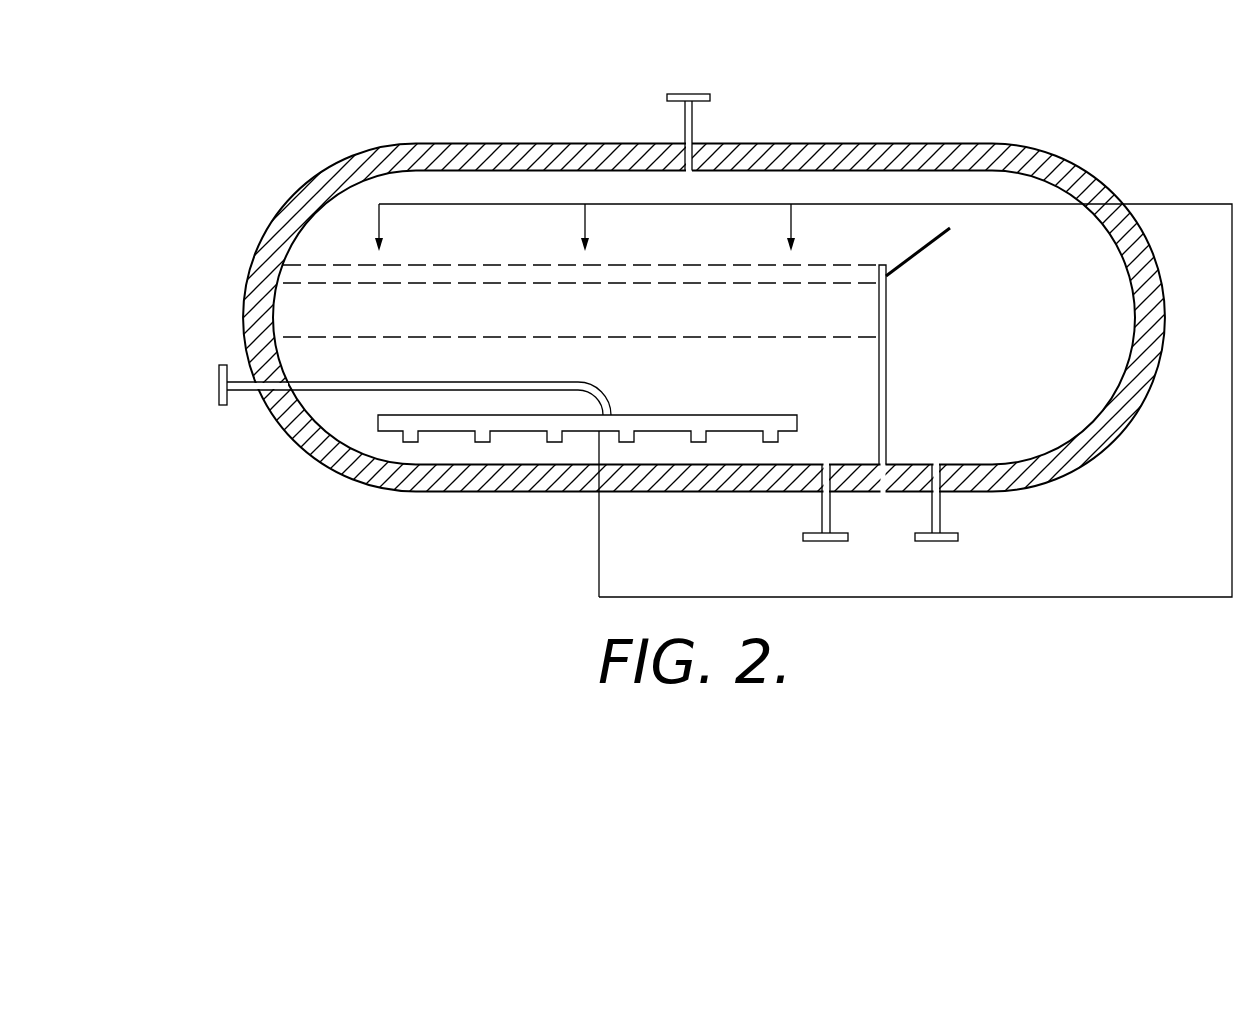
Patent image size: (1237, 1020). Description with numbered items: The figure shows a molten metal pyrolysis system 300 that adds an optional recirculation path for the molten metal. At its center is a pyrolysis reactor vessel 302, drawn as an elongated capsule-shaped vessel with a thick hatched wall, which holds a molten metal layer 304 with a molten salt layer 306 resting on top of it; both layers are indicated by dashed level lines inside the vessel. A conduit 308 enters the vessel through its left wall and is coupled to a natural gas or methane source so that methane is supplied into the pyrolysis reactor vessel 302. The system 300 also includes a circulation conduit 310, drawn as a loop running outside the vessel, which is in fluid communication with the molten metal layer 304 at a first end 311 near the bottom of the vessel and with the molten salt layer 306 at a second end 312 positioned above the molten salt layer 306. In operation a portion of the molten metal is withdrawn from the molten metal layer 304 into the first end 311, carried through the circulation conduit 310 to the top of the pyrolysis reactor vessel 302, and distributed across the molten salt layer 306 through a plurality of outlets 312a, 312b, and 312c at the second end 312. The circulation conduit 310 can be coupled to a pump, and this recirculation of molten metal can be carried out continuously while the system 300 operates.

The system 300 is at (702, 351).
The pyrolysis reactor vessel 302 is at (1033, 149).
The molten metal layer 304 is at (286, 347).
The molten salt layer 306 is at (286, 309).
The conduit 308 is at (246, 396).
The circulation conduit 310 is at (1022, 598).
The first end 311 is at (599, 449).
The second end 312 is at (628, 172).
The outlet 312a is at (380, 228).
The outlet 312b is at (586, 228).
The outlet 312c is at (792, 228).